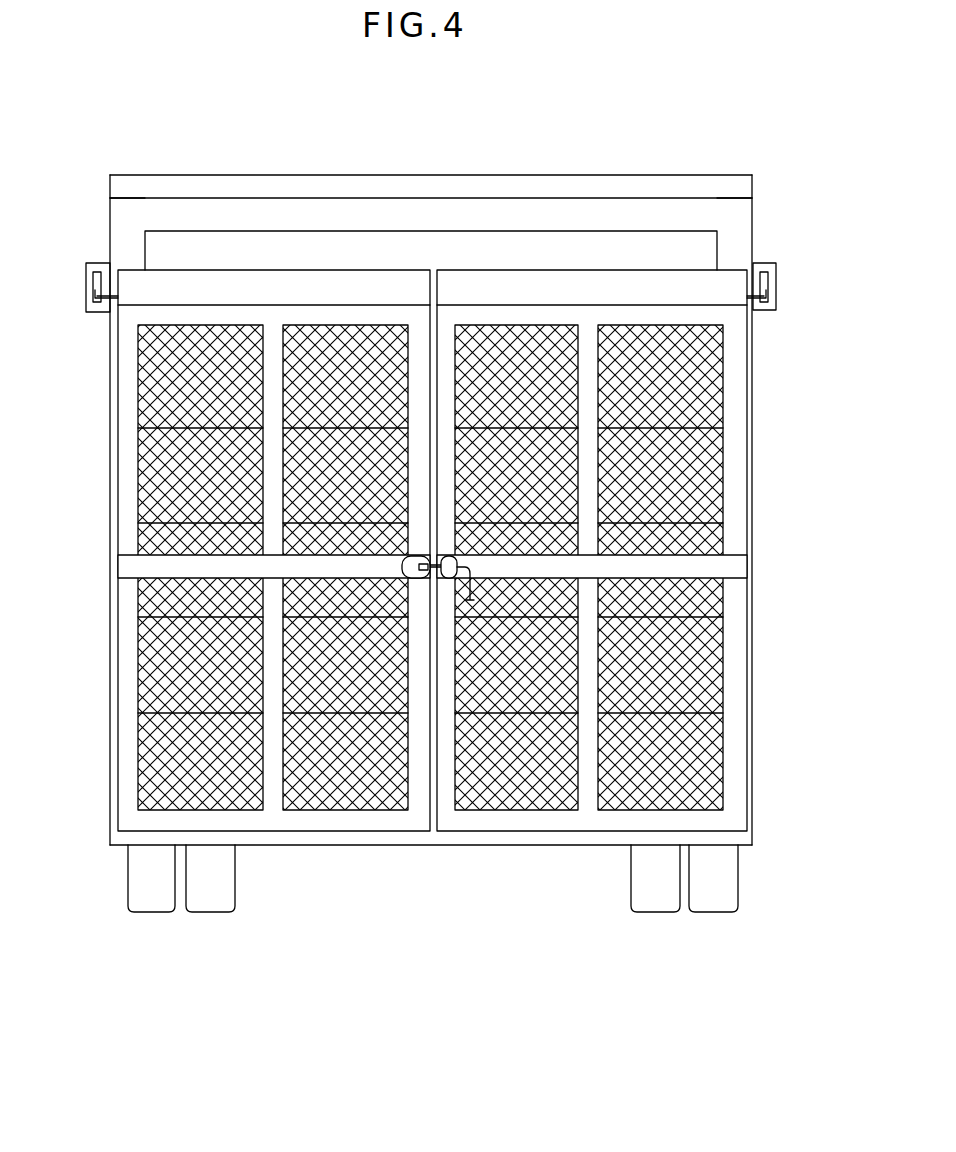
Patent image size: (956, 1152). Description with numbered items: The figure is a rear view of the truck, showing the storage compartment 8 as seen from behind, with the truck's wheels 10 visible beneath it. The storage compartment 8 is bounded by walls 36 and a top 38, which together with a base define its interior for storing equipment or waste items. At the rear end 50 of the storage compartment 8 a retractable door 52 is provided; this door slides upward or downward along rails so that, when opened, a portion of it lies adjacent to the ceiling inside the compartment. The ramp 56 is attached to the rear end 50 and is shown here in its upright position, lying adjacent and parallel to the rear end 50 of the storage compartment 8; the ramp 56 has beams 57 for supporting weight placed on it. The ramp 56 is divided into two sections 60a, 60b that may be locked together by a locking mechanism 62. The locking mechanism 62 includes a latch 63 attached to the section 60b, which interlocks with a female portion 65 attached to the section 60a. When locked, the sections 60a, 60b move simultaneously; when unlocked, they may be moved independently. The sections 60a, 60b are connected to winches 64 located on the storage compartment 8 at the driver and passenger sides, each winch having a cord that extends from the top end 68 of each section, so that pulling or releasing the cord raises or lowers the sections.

The storage compartment 8 is at (98, 618).
The wheels 10 is at (150, 912).
The walls 36 is at (122, 232).
The top 38 is at (518, 175).
The rear end 50 is at (742, 838).
The retractable door 52 is at (632, 253).
The ramp 56 is at (752, 500).
The beams 57 is at (283, 345).
The section 60a is at (307, 820).
The section 60b is at (570, 818).
The locking mechanism 62 is at (441, 592).
The latch 63 is at (470, 567).
The winches 64 is at (86, 285).
The female portion 65 is at (402, 567).
The top end 68 is at (135, 295).